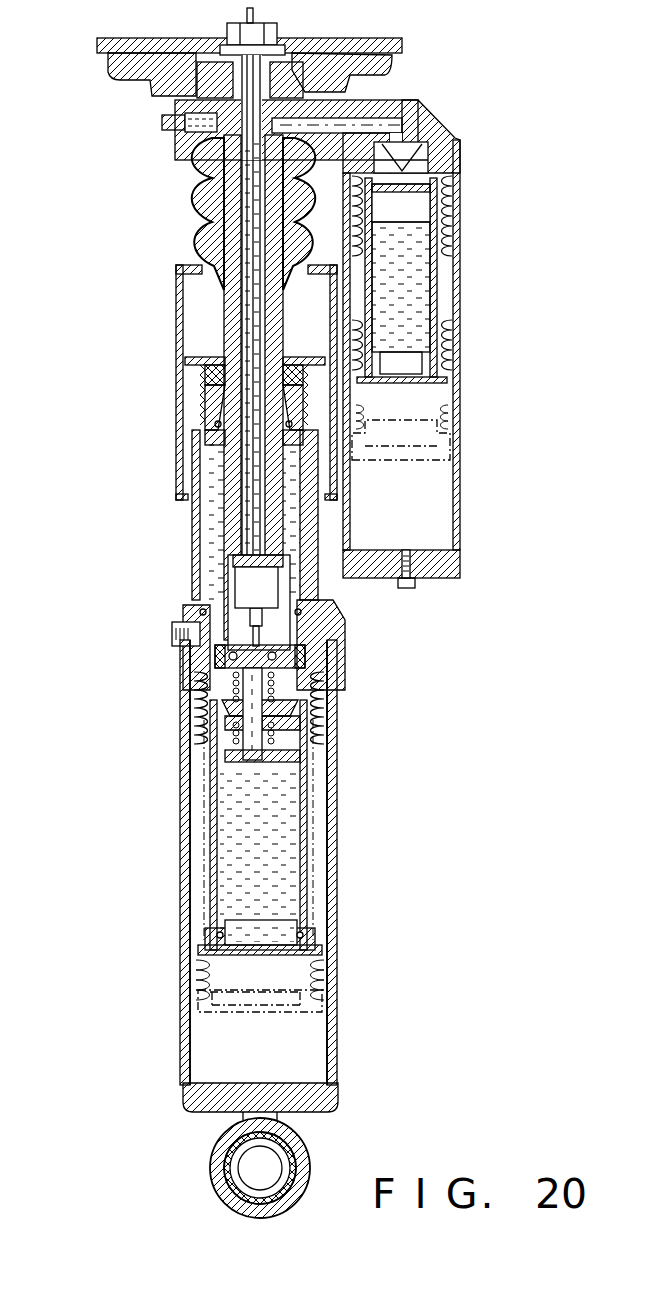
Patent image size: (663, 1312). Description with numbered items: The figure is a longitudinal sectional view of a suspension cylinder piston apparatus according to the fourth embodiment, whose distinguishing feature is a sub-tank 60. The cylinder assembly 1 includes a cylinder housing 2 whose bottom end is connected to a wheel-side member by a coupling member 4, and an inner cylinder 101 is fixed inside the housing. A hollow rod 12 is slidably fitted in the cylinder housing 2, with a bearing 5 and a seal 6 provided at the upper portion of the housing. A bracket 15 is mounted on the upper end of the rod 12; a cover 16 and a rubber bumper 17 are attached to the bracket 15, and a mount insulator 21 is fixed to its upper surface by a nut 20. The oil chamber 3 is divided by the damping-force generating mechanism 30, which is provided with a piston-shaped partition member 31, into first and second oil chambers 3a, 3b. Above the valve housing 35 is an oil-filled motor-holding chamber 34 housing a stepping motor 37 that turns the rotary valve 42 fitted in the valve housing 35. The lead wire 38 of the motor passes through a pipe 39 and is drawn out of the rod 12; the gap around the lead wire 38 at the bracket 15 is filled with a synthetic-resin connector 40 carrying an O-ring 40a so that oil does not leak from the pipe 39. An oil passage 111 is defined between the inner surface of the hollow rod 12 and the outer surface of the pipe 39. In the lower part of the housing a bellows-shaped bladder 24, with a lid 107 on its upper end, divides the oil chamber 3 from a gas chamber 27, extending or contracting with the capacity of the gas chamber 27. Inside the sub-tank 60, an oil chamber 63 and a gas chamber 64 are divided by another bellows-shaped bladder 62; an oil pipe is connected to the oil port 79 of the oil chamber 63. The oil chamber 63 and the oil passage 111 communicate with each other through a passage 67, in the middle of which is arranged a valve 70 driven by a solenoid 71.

The cylinder assembly 1 is at (98, 254).
The cylinder housing 2 is at (180, 909).
The first oil chamber 3 is at (290, 863).
The first oil chamber 3a is at (290, 813).
The second oil chamber 3b is at (293, 638).
The coupling member 4 is at (308, 1148).
The bearing 5 is at (206, 396).
The seal 6 is at (205, 373).
The hollow rod 12 is at (216, 344).
The bracket 15 is at (300, 106).
The cover 16 is at (176, 337).
The rubber bumper 17 is at (205, 206).
The nut 20 is at (226, 36).
The mount insulator 21 is at (300, 48).
The bellows-shaped bladder 24 is at (307, 933).
The gas chamber 27 is at (315, 1046).
The damping-force generating mechanism 30 is at (290, 736).
The piston-shaped partition member 31 is at (290, 723).
The motor-holding chamber 34 is at (232, 569).
The valve housing 35 is at (296, 676).
The stepping motor 37 is at (245, 591).
The lead wire 38 is at (246, 176).
The pipe 39 is at (232, 320).
The connector 40 is at (268, 58).
The O-ring 40a is at (224, 78).
The rotary valve 42 is at (284, 691).
The sub-tank 60 is at (456, 344).
The bellows-shaped bladder 62 is at (436, 194).
The oil chamber 63 is at (412, 303).
The gas chamber 64 is at (440, 514).
The passage 67 is at (398, 125).
The valve 70 is at (404, 173).
The solenoid 71 is at (408, 202).
The oil port 79 is at (162, 123).
The inner cylinder 101 is at (218, 813).
The lid 107 is at (258, 958).
The oil passage 111 is at (284, 320).